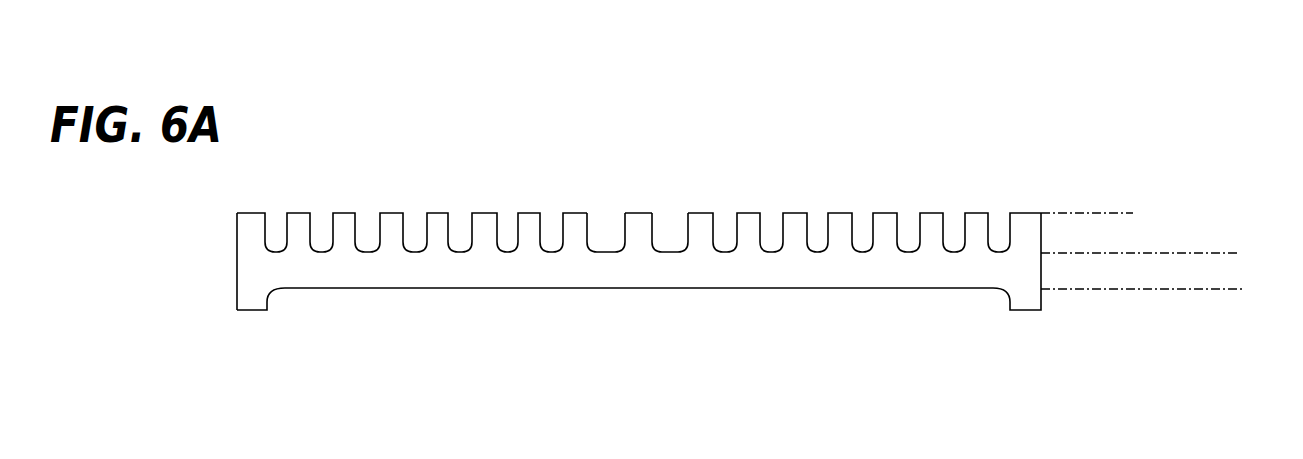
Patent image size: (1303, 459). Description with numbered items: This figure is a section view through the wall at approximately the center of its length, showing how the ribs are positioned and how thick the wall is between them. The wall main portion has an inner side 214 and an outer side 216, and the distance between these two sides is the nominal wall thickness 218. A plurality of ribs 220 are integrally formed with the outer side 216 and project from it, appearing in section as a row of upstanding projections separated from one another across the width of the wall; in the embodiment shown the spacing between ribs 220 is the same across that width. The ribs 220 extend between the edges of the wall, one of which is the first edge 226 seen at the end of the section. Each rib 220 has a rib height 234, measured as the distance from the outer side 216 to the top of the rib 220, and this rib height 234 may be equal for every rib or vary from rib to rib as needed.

The inner side 214 is at (423, 289).
The outer side 216 is at (671, 252).
The nominal wall thickness 218 is at (1235, 302).
The ribs 220 is at (345, 213).
The first edge 226 is at (237, 252).
The rib height 234 is at (1127, 266).